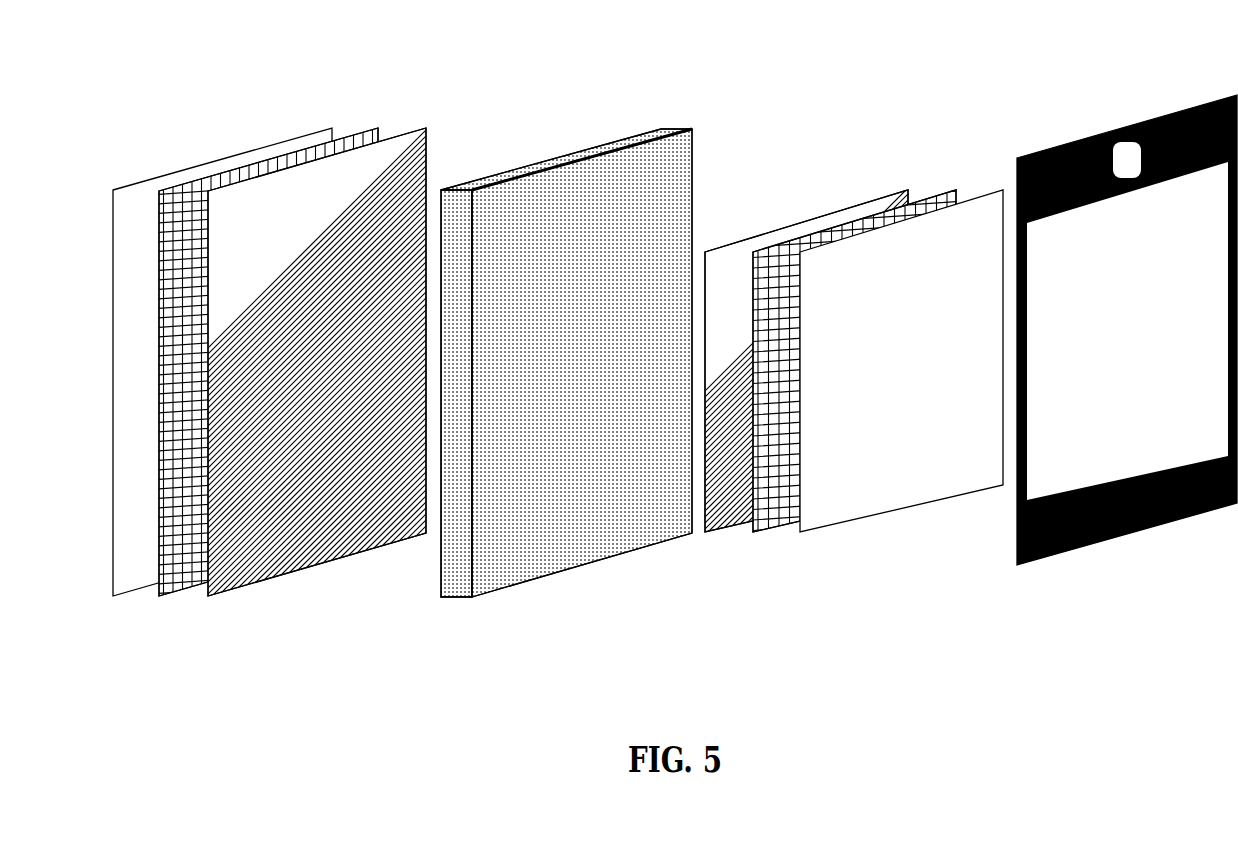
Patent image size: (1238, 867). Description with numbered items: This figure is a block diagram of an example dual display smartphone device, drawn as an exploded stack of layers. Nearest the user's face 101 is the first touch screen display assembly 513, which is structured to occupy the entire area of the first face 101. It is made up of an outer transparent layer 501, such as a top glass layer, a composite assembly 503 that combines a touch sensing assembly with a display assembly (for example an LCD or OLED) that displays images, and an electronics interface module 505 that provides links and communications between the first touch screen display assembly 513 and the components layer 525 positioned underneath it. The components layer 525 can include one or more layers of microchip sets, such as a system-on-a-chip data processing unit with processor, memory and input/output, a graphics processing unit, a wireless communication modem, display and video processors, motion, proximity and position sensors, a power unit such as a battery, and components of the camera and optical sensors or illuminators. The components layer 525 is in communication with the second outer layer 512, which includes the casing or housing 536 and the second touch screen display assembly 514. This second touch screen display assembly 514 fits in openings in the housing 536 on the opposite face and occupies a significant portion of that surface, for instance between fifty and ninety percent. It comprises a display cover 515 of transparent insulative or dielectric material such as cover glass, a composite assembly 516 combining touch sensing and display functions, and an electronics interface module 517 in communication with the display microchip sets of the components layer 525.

The first face 101 is at (166, 150).
The outer transparent layer 501 is at (318, 130).
The composite assembly 503 is at (363, 130).
The electronics interface module 505 is at (332, 84).
The first touch screen display assembly 513 is at (462, 321).
The components layer 525 is at (661, 128).
The second touch screen display assembly 514 is at (897, 411).
The display cover 515 is at (901, 383).
The composite assembly 516 is at (760, 534).
The electronics interface module 517 is at (714, 534).
The second outer layer 512 is at (897, 412).
The housing 536 is at (1127, 349).